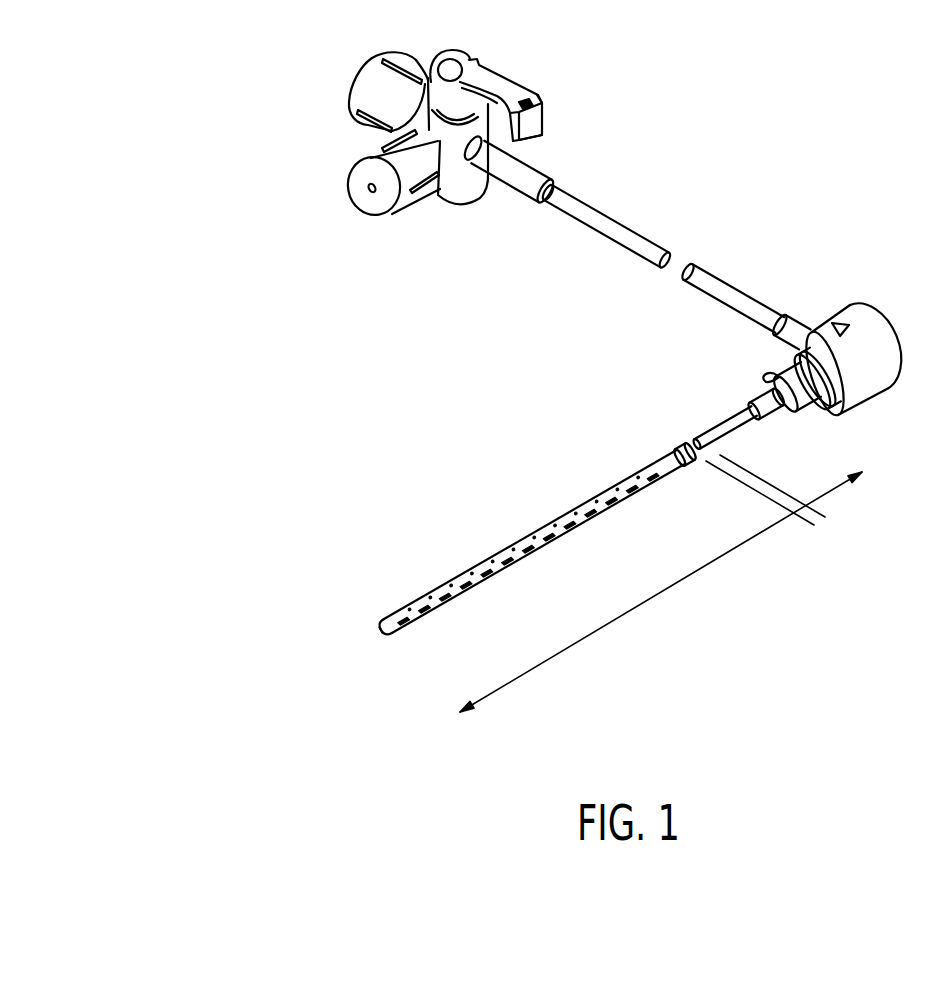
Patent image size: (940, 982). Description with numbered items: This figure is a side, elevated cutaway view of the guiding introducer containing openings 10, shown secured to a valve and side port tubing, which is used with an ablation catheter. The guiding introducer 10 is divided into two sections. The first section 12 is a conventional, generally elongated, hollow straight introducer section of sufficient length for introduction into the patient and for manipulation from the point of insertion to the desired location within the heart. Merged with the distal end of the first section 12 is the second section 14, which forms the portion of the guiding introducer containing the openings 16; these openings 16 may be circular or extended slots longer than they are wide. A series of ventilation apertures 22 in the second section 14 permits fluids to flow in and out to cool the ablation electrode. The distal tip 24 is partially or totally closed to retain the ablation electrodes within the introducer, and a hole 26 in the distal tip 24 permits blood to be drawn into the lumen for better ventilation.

The guiding introducer containing openings 10 is at (325, 357).
The first section 12 is at (708, 428).
The second section 14 is at (543, 527).
The openings 16 is at (443, 603).
The ventilation apertures 22 is at (600, 495).
The distal tip 24 is at (386, 638).
The hole 26 is at (383, 632).